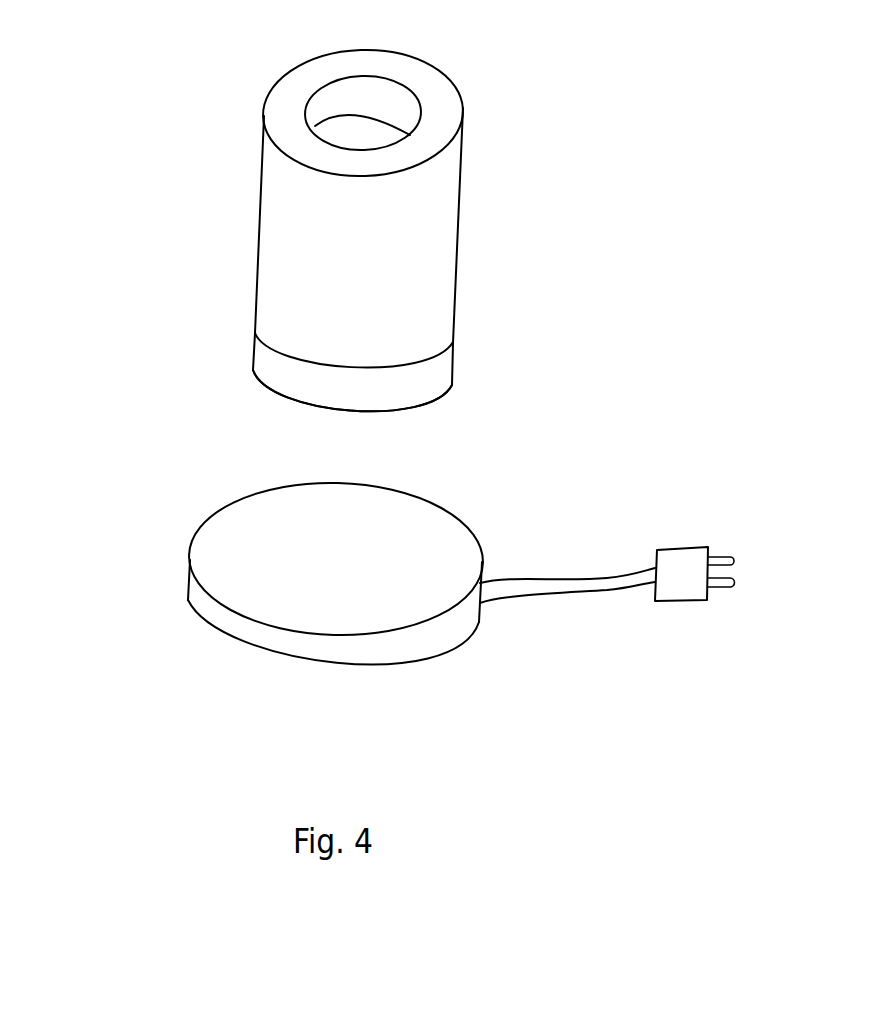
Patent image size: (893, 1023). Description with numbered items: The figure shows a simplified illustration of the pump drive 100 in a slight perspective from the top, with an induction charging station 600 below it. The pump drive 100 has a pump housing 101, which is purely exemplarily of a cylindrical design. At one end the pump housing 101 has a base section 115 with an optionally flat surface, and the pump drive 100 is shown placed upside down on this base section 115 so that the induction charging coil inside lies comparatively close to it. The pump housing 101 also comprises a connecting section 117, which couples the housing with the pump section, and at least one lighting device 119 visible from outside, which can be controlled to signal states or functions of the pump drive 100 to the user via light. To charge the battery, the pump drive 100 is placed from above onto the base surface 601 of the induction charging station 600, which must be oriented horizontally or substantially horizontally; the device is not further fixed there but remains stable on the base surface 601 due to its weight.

The pump drive 100 is at (320, 229).
The pump housing 101 is at (460, 232).
The base section 115 is at (288, 402).
The connecting section 117 is at (356, 118).
The lighting device 119 is at (438, 373).
The induction charging station 600 is at (396, 602).
The base surface 601 is at (355, 572).